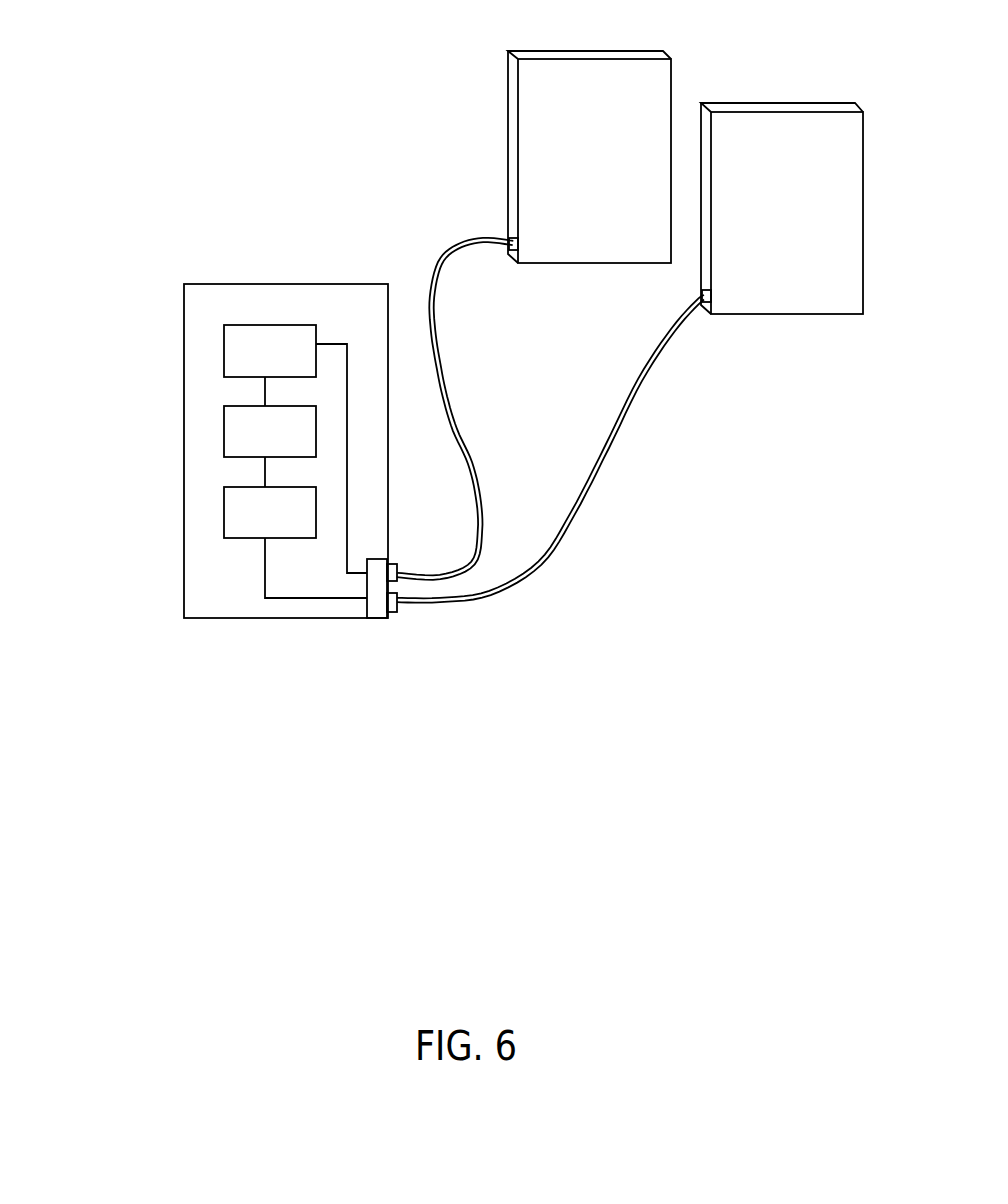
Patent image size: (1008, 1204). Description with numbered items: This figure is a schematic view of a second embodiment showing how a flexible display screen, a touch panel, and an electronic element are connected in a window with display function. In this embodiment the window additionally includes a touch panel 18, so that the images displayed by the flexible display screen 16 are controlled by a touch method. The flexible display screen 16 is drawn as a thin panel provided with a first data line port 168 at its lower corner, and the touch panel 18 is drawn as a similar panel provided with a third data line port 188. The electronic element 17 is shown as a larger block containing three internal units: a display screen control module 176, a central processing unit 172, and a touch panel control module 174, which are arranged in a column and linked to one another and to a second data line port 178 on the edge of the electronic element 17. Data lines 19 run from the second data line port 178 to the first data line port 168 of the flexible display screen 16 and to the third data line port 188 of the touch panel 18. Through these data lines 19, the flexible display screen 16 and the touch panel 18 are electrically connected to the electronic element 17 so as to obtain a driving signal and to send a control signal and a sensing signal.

The flexible display screen 16 is at (565, 137).
The first data line port 168 is at (513, 250).
The touch panel 18 is at (802, 142).
The third data line port 188 is at (707, 293).
The electronic element 17 is at (332, 295).
The display screen control module 176 is at (240, 353).
The central processing unit 172 is at (250, 447).
The touch panel control module 174 is at (246, 522).
The second data line port 178 is at (390, 608).
The data lines 19 is at (440, 378).